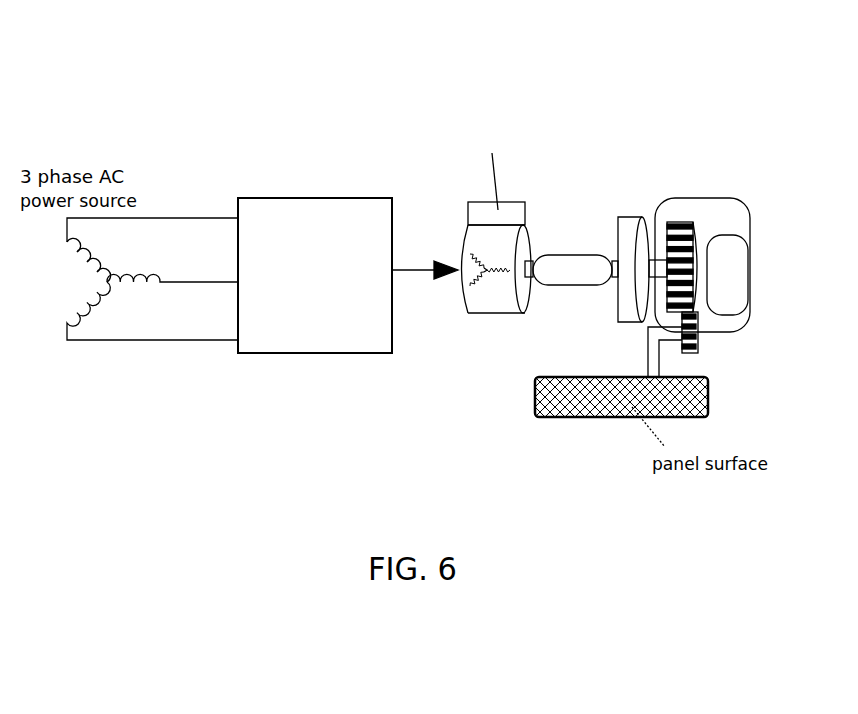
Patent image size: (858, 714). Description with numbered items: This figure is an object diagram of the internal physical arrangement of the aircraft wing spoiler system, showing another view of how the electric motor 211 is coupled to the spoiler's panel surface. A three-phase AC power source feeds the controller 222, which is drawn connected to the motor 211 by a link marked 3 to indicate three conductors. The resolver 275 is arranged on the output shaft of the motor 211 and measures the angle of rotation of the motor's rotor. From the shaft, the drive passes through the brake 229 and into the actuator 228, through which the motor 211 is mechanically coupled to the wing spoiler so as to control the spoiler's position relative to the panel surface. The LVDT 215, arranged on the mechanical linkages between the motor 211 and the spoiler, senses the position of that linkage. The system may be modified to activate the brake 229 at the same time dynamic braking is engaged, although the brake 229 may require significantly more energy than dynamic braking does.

The controller 222 is at (296, 300).
The three-conductor bus 3 is at (408, 283).
The electric motor 211 is at (482, 315).
The resolver 275 is at (553, 254).
The brake 229 is at (640, 220).
The actuator 228 is at (705, 208).
The LVDT 215 is at (732, 275).